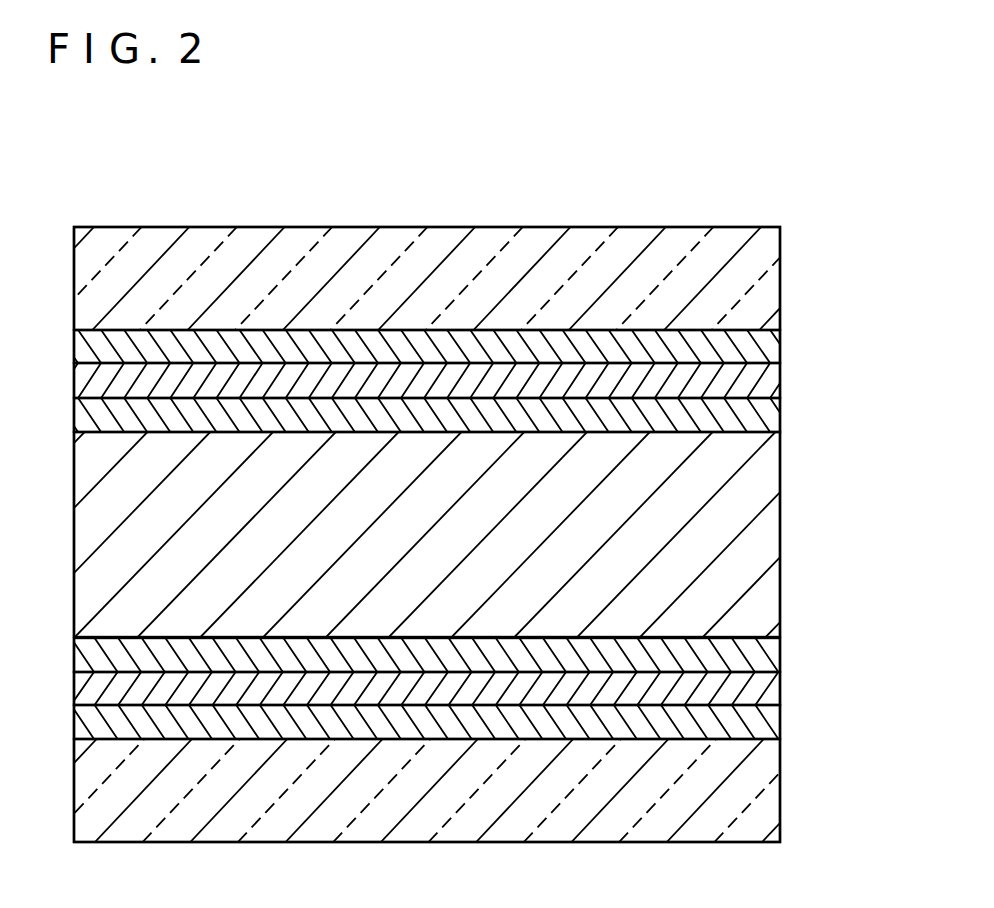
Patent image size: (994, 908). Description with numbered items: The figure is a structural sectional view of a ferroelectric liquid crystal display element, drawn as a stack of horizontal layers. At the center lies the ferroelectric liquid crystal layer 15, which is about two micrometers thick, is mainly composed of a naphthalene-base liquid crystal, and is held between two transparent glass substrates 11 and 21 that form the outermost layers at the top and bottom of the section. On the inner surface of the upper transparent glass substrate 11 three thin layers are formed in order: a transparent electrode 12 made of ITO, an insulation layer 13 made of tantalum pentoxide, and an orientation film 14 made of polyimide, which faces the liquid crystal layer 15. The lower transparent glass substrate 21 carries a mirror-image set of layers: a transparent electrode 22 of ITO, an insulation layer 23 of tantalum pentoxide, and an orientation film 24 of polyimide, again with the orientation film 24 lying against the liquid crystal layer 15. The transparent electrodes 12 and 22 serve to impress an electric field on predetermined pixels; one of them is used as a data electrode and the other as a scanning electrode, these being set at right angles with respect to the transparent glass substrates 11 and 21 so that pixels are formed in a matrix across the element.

The transparent glass substrate 11 is at (772, 289).
The transparent electrode 12 is at (771, 352).
The insulation layer 13 is at (772, 386).
The orientation film 14 is at (770, 420).
The ferroelectric liquid crystal layer 15 is at (765, 538).
The orientation film 24 is at (768, 648).
The insulation layer 23 is at (766, 693).
The transparent electrode 22 is at (766, 727).
The transparent glass substrate 21 is at (766, 802).